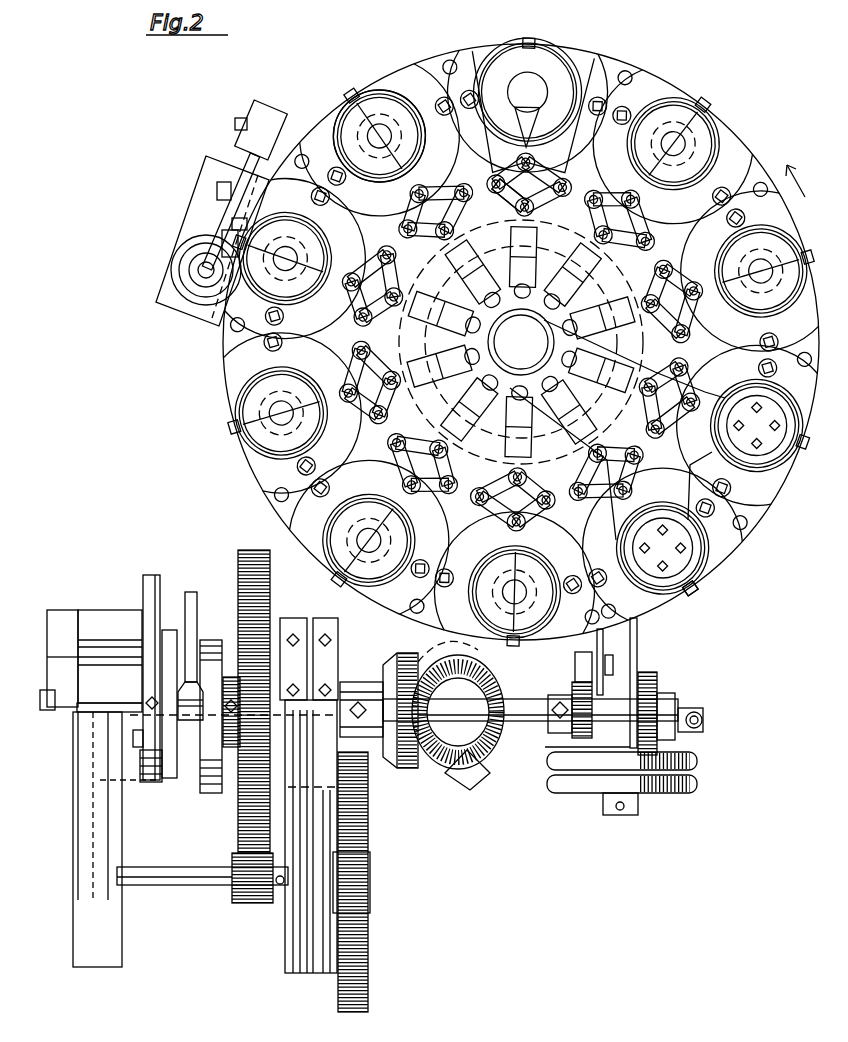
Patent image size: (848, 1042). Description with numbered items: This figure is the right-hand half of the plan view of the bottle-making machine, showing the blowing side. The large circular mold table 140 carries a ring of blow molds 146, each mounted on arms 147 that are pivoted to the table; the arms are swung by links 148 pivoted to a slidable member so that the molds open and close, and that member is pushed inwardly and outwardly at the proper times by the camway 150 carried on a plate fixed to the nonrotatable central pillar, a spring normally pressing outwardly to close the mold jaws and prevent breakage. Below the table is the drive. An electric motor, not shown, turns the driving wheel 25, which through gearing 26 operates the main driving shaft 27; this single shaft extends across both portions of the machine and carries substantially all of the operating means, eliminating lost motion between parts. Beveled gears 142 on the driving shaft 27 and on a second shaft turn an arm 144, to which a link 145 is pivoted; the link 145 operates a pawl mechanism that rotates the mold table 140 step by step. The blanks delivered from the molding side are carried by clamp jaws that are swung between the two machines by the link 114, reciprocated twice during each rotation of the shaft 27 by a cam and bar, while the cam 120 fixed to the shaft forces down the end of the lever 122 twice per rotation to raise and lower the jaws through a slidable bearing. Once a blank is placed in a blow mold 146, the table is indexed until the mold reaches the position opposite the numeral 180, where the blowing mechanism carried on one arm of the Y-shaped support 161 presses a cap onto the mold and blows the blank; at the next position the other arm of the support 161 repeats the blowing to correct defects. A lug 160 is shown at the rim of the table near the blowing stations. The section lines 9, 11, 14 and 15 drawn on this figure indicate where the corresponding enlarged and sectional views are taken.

The mold table 140 is at (758, 514).
The blow molds 146 is at (413, 88).
The arms 147 is at (389, 136).
The links 148 is at (462, 230).
The camway 150 is at (620, 268).
The stop lug 160 is at (706, 577).
The Y-shaped support 161 is at (736, 536).
The blowing position 180 is at (662, 617).
The link 145 is at (427, 632).
The beveled gears 142 is at (428, 770).
The arm 144 is at (487, 770).
The main driving shaft 27 is at (530, 723).
The driving wheel 25 is at (368, 833).
The gearing 26 is at (238, 847).
The link 114 is at (195, 600).
The lever 122 is at (147, 598).
The cam 120 is at (170, 778).
The section line 14— 14 is at (130, 545).
The section line 11— 11 is at (180, 603).
The section line 9— 9 is at (240, 610).
The section line 15— 15 is at (328, 608).